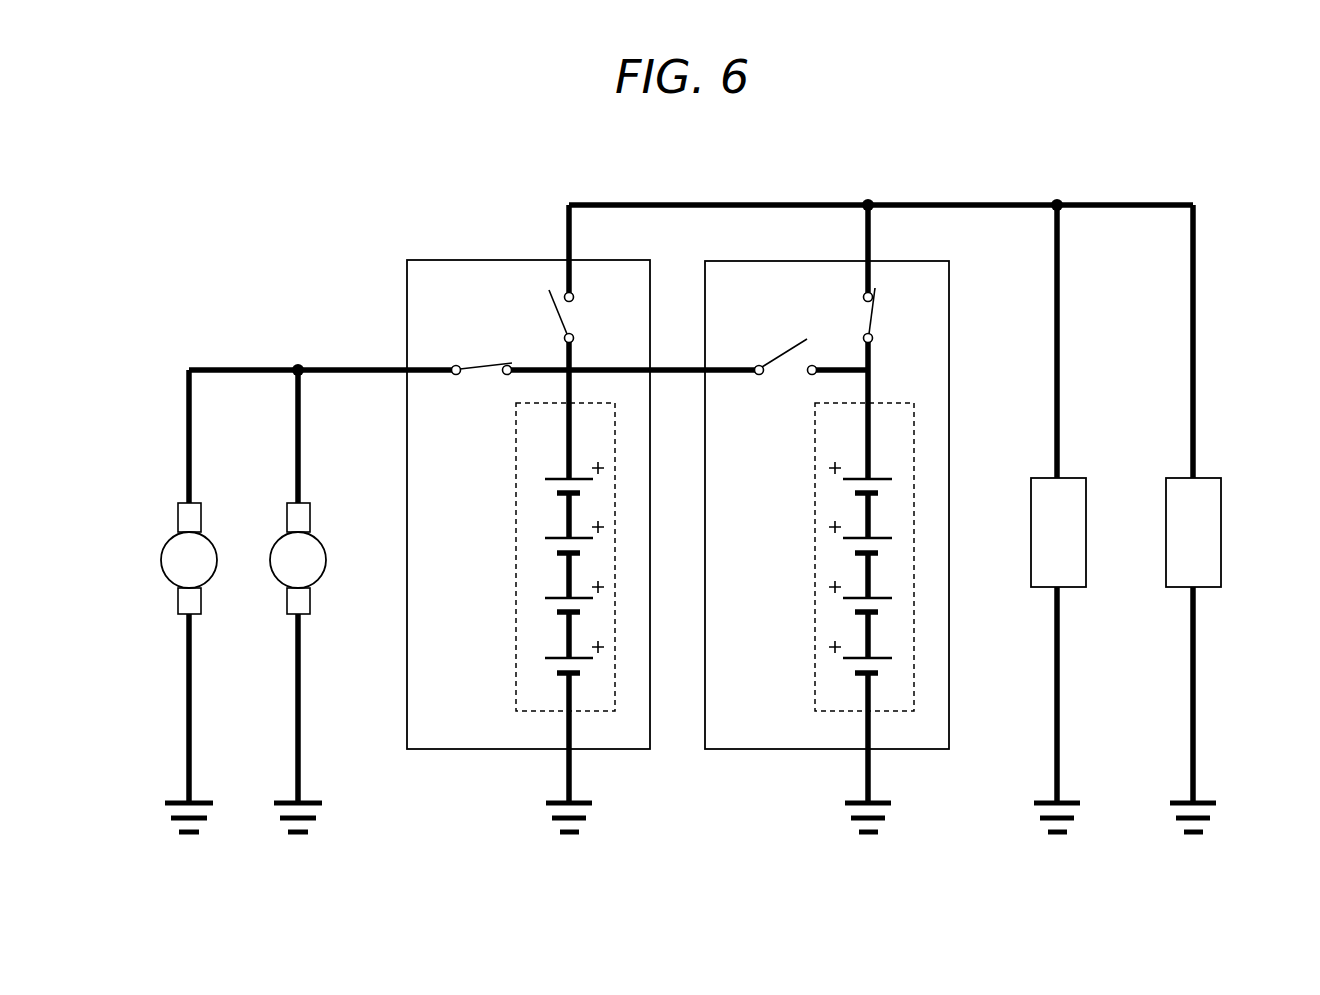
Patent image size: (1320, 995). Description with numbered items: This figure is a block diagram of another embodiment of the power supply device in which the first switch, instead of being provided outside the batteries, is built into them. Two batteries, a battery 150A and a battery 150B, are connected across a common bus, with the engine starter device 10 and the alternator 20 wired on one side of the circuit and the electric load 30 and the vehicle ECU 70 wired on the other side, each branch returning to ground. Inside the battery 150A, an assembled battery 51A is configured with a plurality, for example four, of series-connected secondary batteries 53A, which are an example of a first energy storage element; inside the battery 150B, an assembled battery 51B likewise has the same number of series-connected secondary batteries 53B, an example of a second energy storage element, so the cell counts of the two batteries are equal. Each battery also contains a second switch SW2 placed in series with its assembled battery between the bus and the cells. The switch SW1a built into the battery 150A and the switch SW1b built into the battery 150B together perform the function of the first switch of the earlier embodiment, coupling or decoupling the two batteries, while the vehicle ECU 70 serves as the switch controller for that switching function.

The engine starter device 10 is at (205, 548).
The alternator 20 is at (283, 548).
The electric load 30 is at (1073, 480).
The vehicle ECU 70 is at (1212, 478).
The battery 150A is at (484, 260).
The battery 150B is at (930, 260).
The assembled battery 51A is at (530, 551).
The assembled battery 51B is at (910, 535).
The secondary batteries 53A is at (556, 478).
The secondary batteries 53B is at (885, 479).
The switch SW1a is at (595, 316).
The switch SW1b is at (789, 343).
The second switch SW2 is at (691, 331).